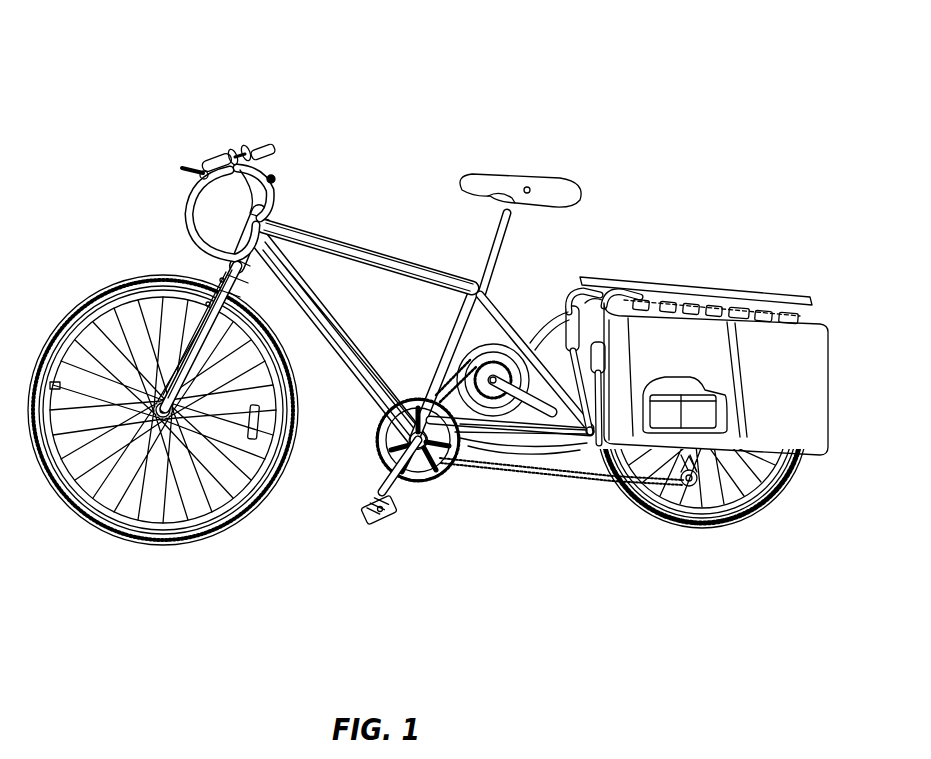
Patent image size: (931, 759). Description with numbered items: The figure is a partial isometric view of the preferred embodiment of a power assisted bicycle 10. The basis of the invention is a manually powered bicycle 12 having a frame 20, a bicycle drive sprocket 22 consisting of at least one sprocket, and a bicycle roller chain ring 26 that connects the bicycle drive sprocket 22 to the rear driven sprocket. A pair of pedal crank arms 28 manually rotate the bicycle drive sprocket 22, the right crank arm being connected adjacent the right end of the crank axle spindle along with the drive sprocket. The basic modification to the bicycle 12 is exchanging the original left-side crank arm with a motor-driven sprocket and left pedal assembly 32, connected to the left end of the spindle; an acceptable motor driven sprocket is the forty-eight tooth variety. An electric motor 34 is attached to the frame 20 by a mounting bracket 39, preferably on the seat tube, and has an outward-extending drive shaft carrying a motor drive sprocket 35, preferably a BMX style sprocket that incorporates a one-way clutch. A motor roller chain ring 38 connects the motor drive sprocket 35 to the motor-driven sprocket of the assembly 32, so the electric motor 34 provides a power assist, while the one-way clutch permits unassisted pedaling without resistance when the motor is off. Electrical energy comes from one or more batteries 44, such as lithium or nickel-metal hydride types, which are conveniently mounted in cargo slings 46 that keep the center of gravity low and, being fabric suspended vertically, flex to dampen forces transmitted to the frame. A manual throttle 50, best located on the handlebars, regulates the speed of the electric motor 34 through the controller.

The power assisted bicycle 10 is at (625, 205).
The manually powered bicycle 12 is at (227, 157).
The frame 20 is at (363, 247).
The bicycle drive sprocket 22 is at (382, 410).
The bicycle roller chain ring 26 is at (688, 480).
The pedal crank arms 28 is at (383, 482).
The motor-driven sprocket and left pedal assembly 32 is at (417, 483).
The electric motor 34 is at (445, 385).
The motor drive sprocket 35 is at (512, 420).
The motor roller chain ring 38 is at (476, 464).
The mounting bracket 39 is at (595, 293).
The batteries 44 is at (660, 425).
The cargo slings 46 is at (760, 343).
The manual throttle 50 is at (270, 143).